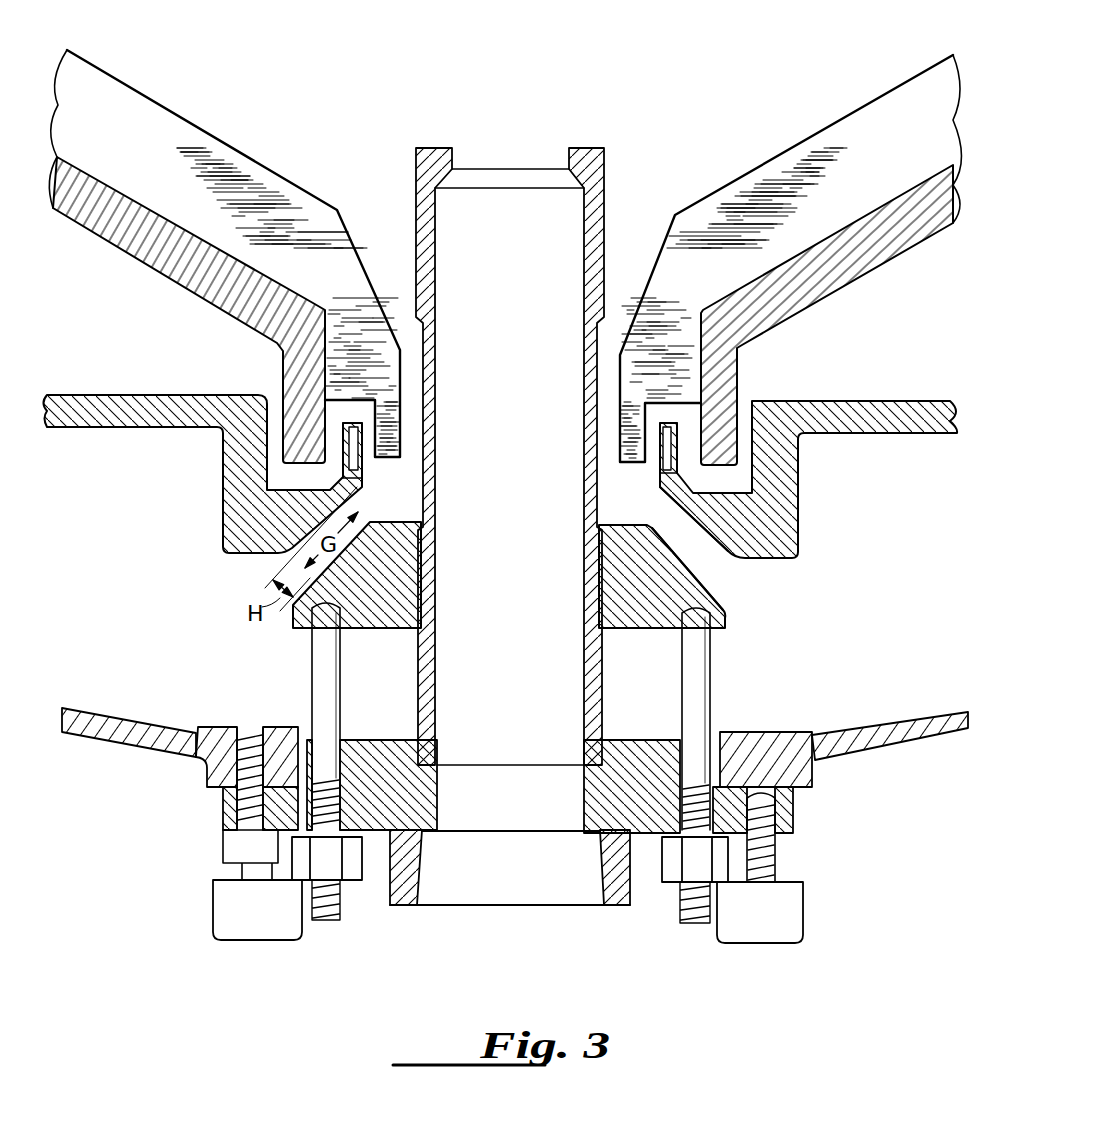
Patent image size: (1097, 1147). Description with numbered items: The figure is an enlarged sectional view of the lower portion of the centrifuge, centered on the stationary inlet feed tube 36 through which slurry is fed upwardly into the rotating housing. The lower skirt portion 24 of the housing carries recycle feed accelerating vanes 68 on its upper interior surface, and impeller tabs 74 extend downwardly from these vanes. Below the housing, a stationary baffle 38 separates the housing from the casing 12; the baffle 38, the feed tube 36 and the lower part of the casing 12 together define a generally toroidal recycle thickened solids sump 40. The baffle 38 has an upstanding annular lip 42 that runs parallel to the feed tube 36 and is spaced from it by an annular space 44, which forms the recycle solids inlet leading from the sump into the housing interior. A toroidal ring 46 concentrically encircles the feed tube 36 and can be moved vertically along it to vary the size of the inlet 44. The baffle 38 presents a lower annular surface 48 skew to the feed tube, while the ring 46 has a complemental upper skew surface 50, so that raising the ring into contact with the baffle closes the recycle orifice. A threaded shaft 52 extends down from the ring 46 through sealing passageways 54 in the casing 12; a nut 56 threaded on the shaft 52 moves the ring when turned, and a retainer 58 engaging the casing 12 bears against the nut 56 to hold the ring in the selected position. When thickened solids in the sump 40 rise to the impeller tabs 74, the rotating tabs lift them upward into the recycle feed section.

The casing 12 is at (777, 743).
The housing lower skirt portion 24 is at (177, 250).
The inlet feed tube 36 is at (413, 165).
The baffle 38 is at (812, 400).
The recycle thickened solids sump 40 is at (908, 582).
The annular lip 42 is at (360, 450).
The annular space 44 is at (677, 528).
The toroidal ring 46 is at (642, 587).
The lower annular surface 48 is at (707, 527).
The upper annular surface 50 is at (700, 570).
The threaded shaft 52 is at (320, 690).
The sealing passageways 54 is at (680, 738).
The nut 56 is at (353, 867).
The retainer 58 is at (228, 910).
The recycle feed accelerating vanes 68 is at (158, 143).
The impeller tabs 74 is at (440, 445).